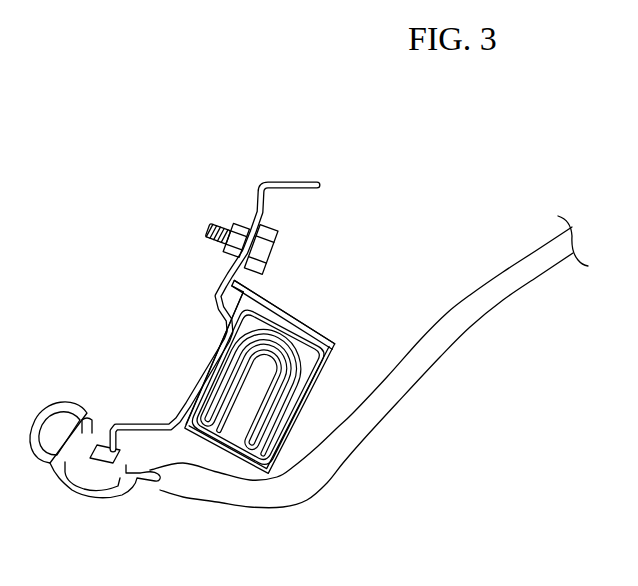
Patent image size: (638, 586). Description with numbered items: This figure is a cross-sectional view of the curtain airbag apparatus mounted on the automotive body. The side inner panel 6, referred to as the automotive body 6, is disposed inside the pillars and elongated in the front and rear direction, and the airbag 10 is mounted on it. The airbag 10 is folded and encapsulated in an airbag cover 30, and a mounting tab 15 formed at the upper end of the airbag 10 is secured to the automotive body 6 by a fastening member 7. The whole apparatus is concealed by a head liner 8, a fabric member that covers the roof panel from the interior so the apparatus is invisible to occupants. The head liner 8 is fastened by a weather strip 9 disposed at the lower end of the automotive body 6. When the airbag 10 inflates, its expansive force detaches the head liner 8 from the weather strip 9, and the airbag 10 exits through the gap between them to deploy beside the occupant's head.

The side inner panel 6 is at (291, 182).
The fastening member 7 is at (271, 256).
The head liner 8 is at (363, 410).
The weather strip 9 is at (78, 484).
The airbag 10 is at (216, 372).
The mounting tab 15 is at (241, 286).
The airbag cover 30 is at (290, 440).